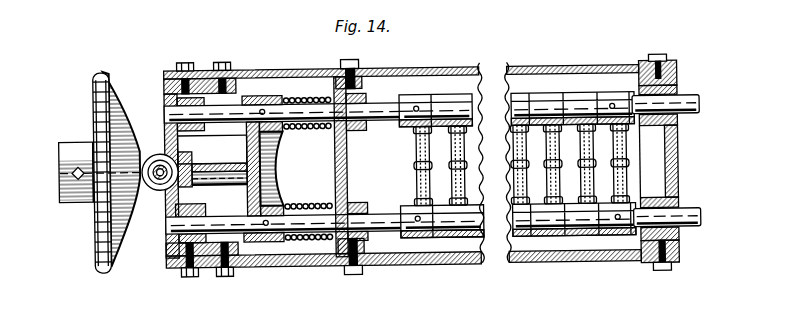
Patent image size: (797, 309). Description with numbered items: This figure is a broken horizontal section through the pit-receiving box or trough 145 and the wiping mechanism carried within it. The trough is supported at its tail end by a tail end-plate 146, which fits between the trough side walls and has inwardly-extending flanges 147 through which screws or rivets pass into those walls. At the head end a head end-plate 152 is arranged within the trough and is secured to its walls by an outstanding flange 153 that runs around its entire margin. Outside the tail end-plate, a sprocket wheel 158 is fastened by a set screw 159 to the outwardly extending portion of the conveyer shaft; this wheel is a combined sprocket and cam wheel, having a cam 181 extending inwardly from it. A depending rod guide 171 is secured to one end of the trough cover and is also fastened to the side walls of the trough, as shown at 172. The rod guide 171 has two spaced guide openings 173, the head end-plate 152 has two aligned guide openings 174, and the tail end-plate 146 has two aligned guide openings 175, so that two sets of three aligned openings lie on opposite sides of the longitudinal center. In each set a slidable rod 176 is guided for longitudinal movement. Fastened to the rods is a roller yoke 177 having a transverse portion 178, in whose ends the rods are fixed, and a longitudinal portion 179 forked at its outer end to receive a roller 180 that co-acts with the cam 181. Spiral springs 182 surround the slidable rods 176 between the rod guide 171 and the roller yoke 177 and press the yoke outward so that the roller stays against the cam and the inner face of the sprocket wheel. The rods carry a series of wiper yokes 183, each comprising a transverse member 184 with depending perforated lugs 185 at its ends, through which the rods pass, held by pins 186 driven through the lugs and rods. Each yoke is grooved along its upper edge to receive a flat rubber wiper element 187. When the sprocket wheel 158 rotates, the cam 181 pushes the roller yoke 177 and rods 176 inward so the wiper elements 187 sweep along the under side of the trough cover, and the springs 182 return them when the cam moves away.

The pit-receiving box or trough 145 is at (420, 264).
The tail end-plate 146 is at (165, 92).
The inwardly-extending flanges 147 is at (222, 63).
The head end-plate 152 is at (676, 158).
The outstanding flange 153 is at (678, 79).
The sprocket wheel 158 is at (100, 275).
The set screw 159 is at (72, 172).
The depending rod guide 171 is at (345, 162).
The fastening of rod guide 172 is at (362, 68).
The guide openings 173 is at (362, 98).
The guide openings 174 is at (678, 133).
The guide openings 175 is at (200, 106).
The slidable rod 176 is at (293, 111).
The roller yoke 177 is at (238, 158).
The transverse portion 178 is at (272, 158).
The longitudinal portion 179 is at (208, 180).
The roller 180 is at (156, 153).
The cam 181 is at (96, 148).
The spiral springs 182 is at (298, 130).
The wiper yokes 183 is at (438, 130).
The transverse member 184 is at (450, 186).
The depending perforated lugs 185 is at (443, 98).
The pins 186 is at (413, 113).
The wiper element 187 is at (430, 153).